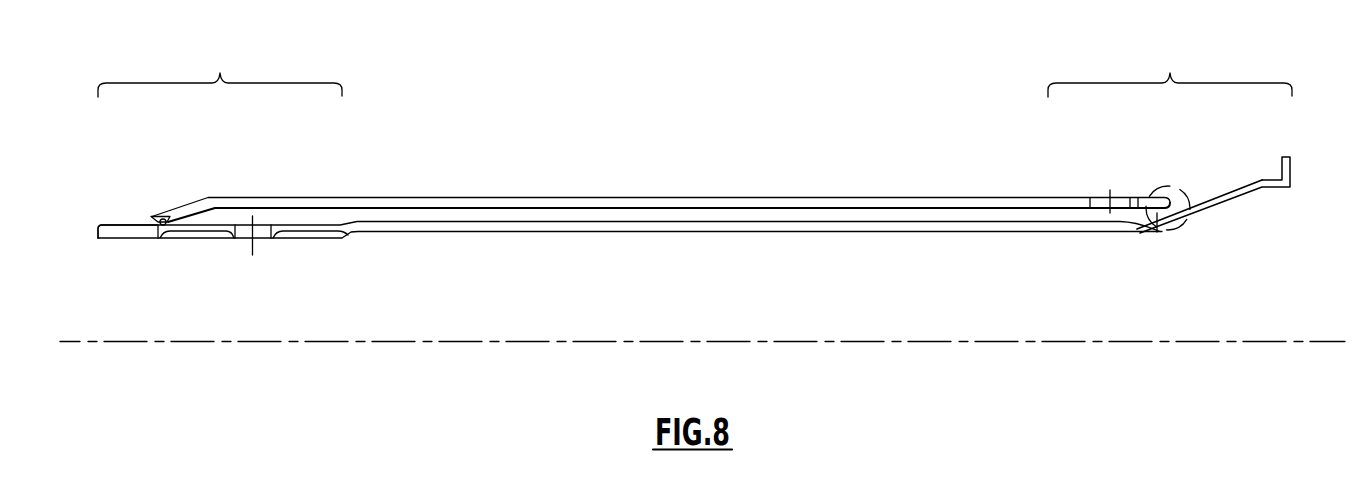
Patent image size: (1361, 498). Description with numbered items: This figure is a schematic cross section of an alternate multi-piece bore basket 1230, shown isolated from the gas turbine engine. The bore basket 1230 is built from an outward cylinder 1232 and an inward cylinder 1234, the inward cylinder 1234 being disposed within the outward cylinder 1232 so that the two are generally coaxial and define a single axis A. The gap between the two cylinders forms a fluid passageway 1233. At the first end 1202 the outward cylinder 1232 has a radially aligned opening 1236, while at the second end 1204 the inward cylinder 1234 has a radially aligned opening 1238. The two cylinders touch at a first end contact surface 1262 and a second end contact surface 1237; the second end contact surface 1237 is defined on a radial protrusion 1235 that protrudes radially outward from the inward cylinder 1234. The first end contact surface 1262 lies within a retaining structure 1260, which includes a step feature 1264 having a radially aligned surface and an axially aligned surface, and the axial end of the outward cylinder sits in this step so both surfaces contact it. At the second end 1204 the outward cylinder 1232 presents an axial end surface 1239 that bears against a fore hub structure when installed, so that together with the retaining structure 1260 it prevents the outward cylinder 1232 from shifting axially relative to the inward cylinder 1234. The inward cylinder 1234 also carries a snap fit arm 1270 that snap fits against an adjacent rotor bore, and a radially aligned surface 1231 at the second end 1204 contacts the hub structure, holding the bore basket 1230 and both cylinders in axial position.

The axis A is at (662, 342).
The first end 1202 is at (1170, 70).
The second end 1204 is at (220, 70).
The multi-piece bore basket 1230 is at (382, 112).
The radially aligned surface 1231 is at (94, 240).
The outward cylinder 1232 is at (493, 202).
The fluid passageway 1233 is at (555, 214).
The inward cylinder 1234 is at (525, 227).
The radial protrusion 1235 is at (158, 222).
The radially aligned opening 1236 is at (1100, 198).
The second end contact surface 1237 is at (167, 218).
The radially aligned opening 1238 is at (265, 228).
The axial end surface 1239 is at (152, 216).
The retaining structure 1260 is at (1177, 185).
The first end contact surface 1262 is at (1157, 227).
The step feature 1264 is at (1190, 217).
The snap fit arm 1270 is at (1292, 167).